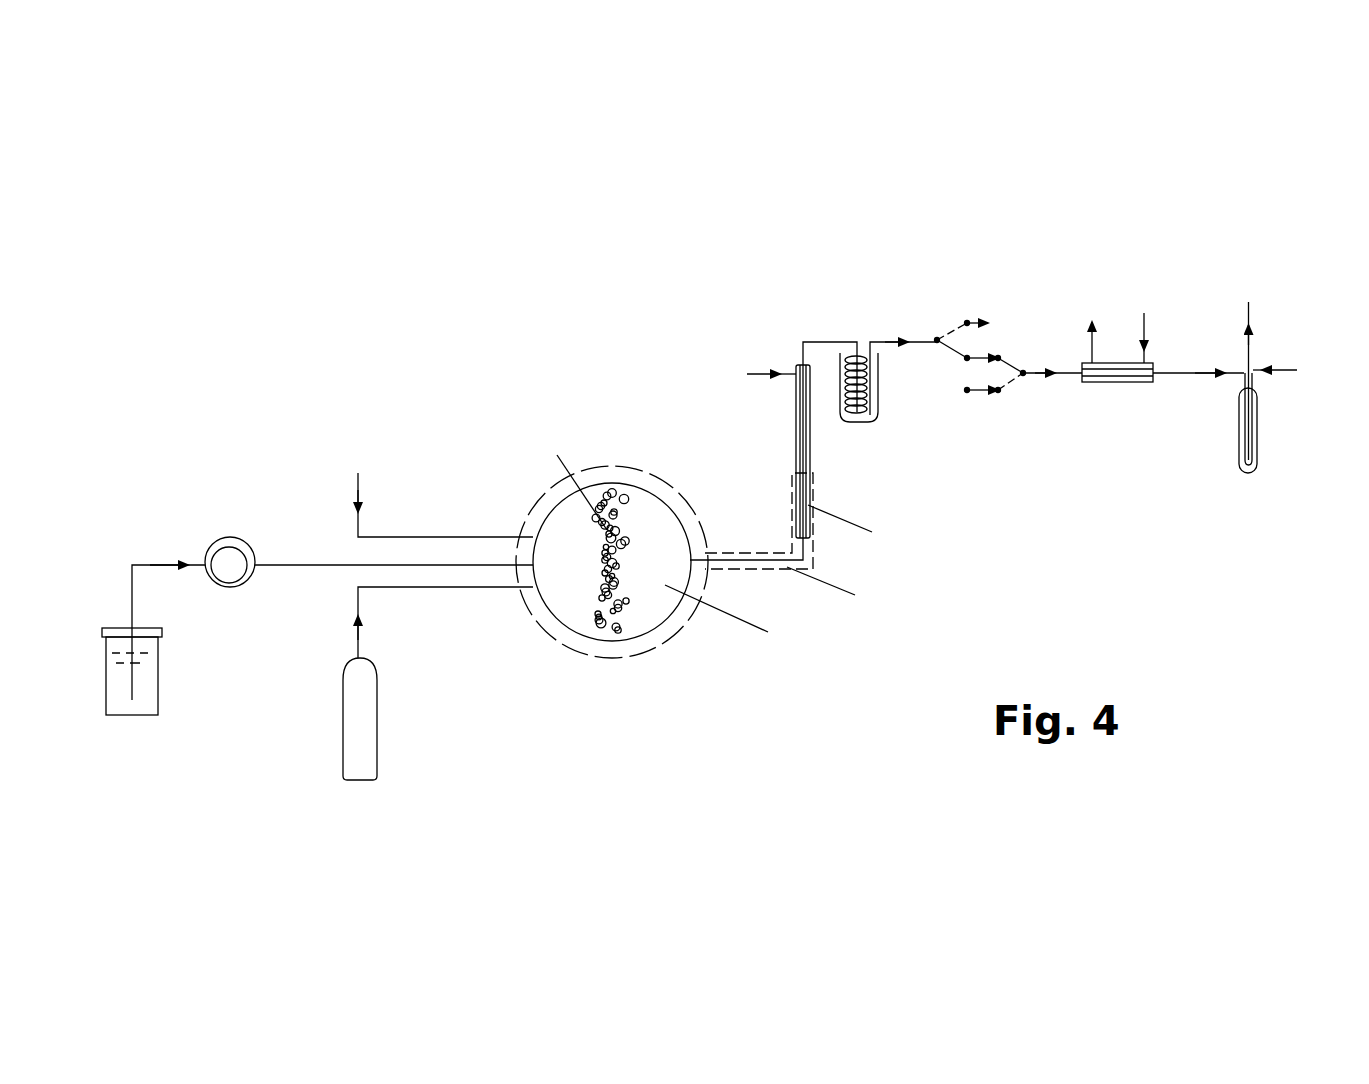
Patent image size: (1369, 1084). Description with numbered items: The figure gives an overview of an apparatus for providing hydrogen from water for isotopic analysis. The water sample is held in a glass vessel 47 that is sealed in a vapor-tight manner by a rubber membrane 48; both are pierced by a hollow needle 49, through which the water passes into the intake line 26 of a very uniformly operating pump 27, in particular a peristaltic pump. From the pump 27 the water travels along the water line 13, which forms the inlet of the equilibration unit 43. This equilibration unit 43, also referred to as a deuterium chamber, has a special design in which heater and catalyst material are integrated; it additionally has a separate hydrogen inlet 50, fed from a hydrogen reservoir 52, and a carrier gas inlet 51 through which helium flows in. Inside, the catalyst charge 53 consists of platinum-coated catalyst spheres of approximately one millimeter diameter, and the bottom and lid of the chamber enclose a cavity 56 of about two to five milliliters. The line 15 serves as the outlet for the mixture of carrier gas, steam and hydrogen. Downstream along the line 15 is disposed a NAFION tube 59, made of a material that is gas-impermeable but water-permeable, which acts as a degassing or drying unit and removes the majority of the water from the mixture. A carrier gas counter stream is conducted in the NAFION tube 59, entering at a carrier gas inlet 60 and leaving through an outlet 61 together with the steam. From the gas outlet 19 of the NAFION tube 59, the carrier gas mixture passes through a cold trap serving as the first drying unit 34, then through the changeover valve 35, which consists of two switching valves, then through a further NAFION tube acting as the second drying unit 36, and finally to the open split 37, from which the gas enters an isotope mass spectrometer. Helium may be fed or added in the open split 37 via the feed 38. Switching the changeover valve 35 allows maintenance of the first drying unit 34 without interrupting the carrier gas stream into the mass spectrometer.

The water line 13 is at (312, 567).
The line 15 is at (732, 553).
The gas outlet 19 is at (815, 340).
The intake line 26 is at (157, 563).
The pump 27 is at (223, 575).
The first drying unit 34 is at (862, 280).
The changeover valve 35 is at (1010, 280).
The second drying unit 36 is at (1127, 280).
The open split 37 is at (1255, 540).
The feed 38 is at (1290, 370).
The equilibration unit 43 is at (632, 450).
The vessel 47 is at (162, 707).
The rubber membrane 48 is at (120, 627).
The hollow needle 49 is at (133, 673).
The hydrogen inlet 50 is at (390, 588).
The carrier gas inlet 51 is at (357, 487).
The hydrogen reservoir 52 is at (368, 760).
The catalyst charge 53 is at (617, 493).
The cavity 56 is at (670, 600).
The NAFION tube 59 is at (808, 453).
The carrier gas inlet 60 is at (760, 367).
The outlet 61 is at (752, 533).